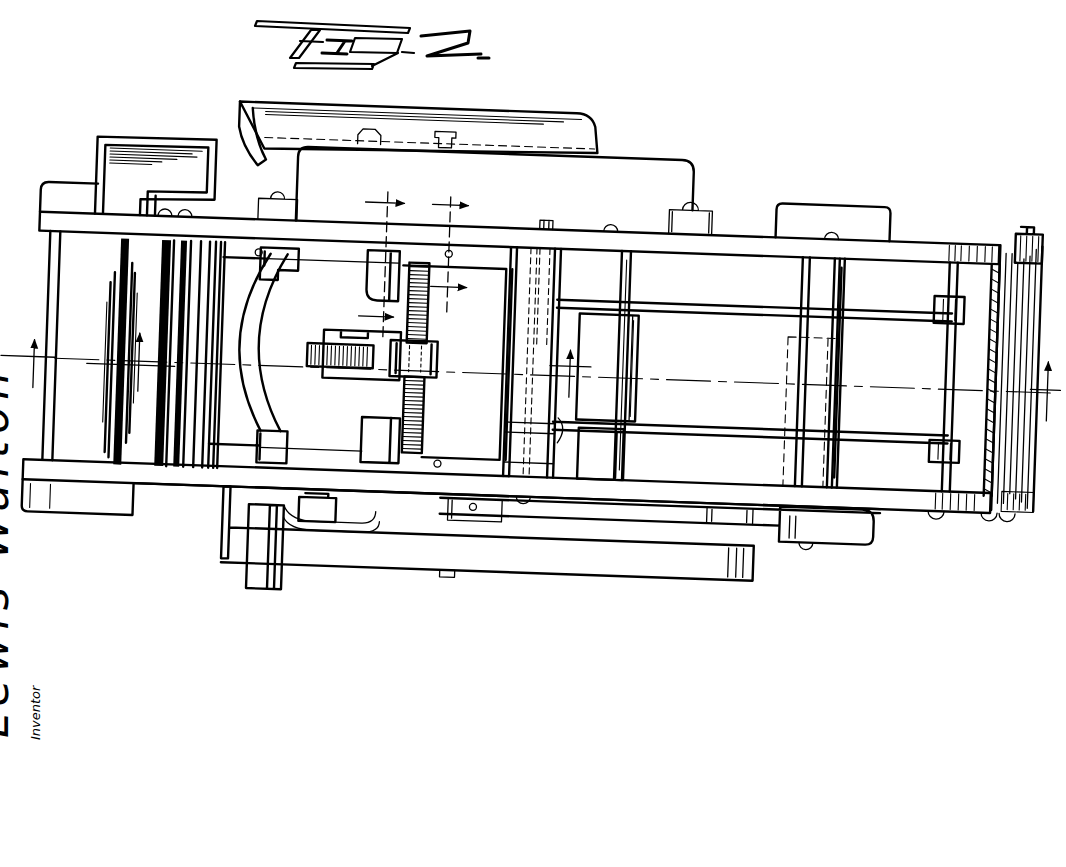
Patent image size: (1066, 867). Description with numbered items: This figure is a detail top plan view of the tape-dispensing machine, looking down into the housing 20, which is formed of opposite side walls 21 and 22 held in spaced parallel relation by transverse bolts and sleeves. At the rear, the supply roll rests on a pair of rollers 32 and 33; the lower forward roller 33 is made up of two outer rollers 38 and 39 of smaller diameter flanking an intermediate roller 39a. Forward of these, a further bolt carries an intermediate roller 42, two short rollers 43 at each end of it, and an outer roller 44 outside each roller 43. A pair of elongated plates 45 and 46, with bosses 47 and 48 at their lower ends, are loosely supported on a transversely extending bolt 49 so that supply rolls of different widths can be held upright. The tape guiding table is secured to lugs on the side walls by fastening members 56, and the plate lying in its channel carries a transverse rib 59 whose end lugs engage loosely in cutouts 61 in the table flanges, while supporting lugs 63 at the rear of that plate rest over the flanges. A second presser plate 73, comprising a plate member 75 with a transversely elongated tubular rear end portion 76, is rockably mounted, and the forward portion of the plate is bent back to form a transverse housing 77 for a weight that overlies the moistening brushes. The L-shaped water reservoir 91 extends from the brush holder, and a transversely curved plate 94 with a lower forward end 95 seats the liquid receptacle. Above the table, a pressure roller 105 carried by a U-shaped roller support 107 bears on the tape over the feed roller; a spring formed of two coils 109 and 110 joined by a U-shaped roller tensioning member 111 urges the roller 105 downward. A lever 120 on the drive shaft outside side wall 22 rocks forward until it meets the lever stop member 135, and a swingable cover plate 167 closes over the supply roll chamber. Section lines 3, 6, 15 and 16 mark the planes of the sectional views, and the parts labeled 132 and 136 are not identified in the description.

The section line 3- 3 is at (531, 387).
The section line 6- 6 is at (346, 384).
The section line 15- 15 is at (355, 263).
The section line 16- 16 is at (449, 246).
The housing 20 is at (917, 210).
The side wall 21 is at (743, 208).
The side wall 22 is at (925, 470).
The roller 32 is at (802, 328).
The roller 33 is at (644, 308).
The outer roller 38 is at (633, 270).
The outer roller 39 is at (634, 448).
The intermediate roller 39a is at (645, 345).
The intermediate roller 42 is at (566, 442).
The short roller 43 is at (560, 269).
The outer roller 44 is at (499, 445).
The plate 45 is at (743, 283).
The plate 46 is at (731, 406).
The boss 47 is at (938, 271).
The boss 48 is at (943, 426).
The transversely extending bolt 49 is at (950, 316).
The fastening member 56 is at (259, 243).
The rib 59 is at (276, 300).
The cutout 61 is at (291, 239).
The supporting lug 63 is at (382, 452).
The second presser plate 73 is at (91, 449).
The plate member 75 is at (138, 447).
The tubular rear end portion 76 is at (165, 451).
The transversely extending housing 77 is at (108, 445).
The water reservoir 91 is at (96, 158).
The transversely curved plate 94 is at (396, 96).
The lower forward end 95 is at (604, 129).
The pressure roller 105 is at (318, 359).
The U-shaped roller support 107 is at (445, 339).
The coil 109 is at (436, 315).
The coil 110 is at (430, 390).
The U-shaped roller tensioning member 111 is at (395, 351).
The lever 120 is at (789, 522).
The base plate 132 is at (569, 552).
The lever stop member 135 is at (344, 512).
The lower bracket 136 is at (280, 569).
The swingable cover plate 167 is at (1009, 440).